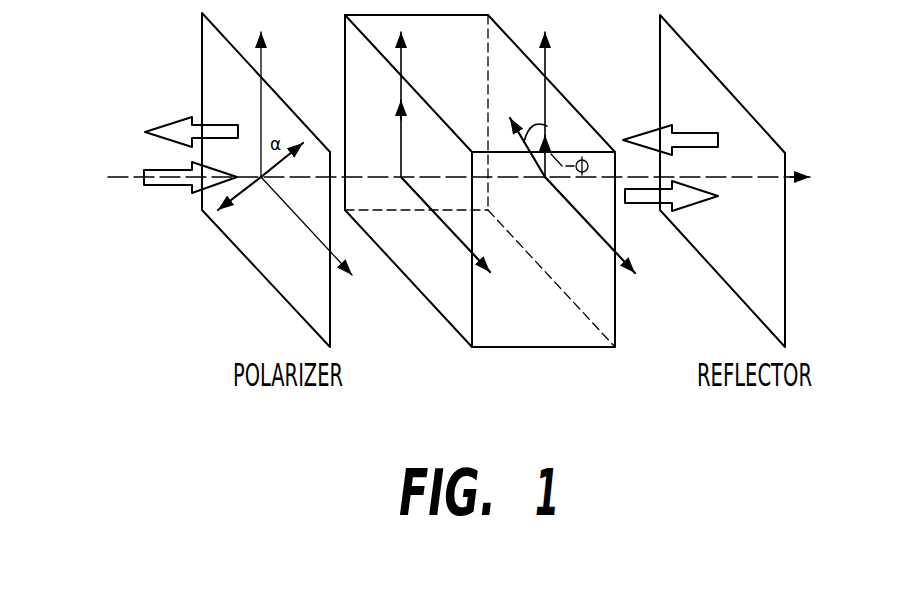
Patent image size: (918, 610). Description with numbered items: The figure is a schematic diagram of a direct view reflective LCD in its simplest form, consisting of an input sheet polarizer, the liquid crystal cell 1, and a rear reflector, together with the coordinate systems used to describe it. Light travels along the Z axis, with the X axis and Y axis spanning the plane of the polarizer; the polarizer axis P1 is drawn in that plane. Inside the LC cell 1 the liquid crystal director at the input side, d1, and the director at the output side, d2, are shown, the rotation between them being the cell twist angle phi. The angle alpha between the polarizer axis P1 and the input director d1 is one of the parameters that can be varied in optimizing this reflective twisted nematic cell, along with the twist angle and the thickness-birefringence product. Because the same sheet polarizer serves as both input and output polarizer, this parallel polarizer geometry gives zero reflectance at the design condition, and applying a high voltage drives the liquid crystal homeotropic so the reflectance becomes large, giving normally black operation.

The LC cell 1 is at (490, 204).
The input director of the LC cell d1 is at (445, 152).
The output director of the LC cell d2 is at (565, 152).
The polarizer transmission axis P1 is at (241, 207).
The X axis X is at (260, 88).
The Y axis Y is at (314, 238).
The Z axis Z is at (470, 178).